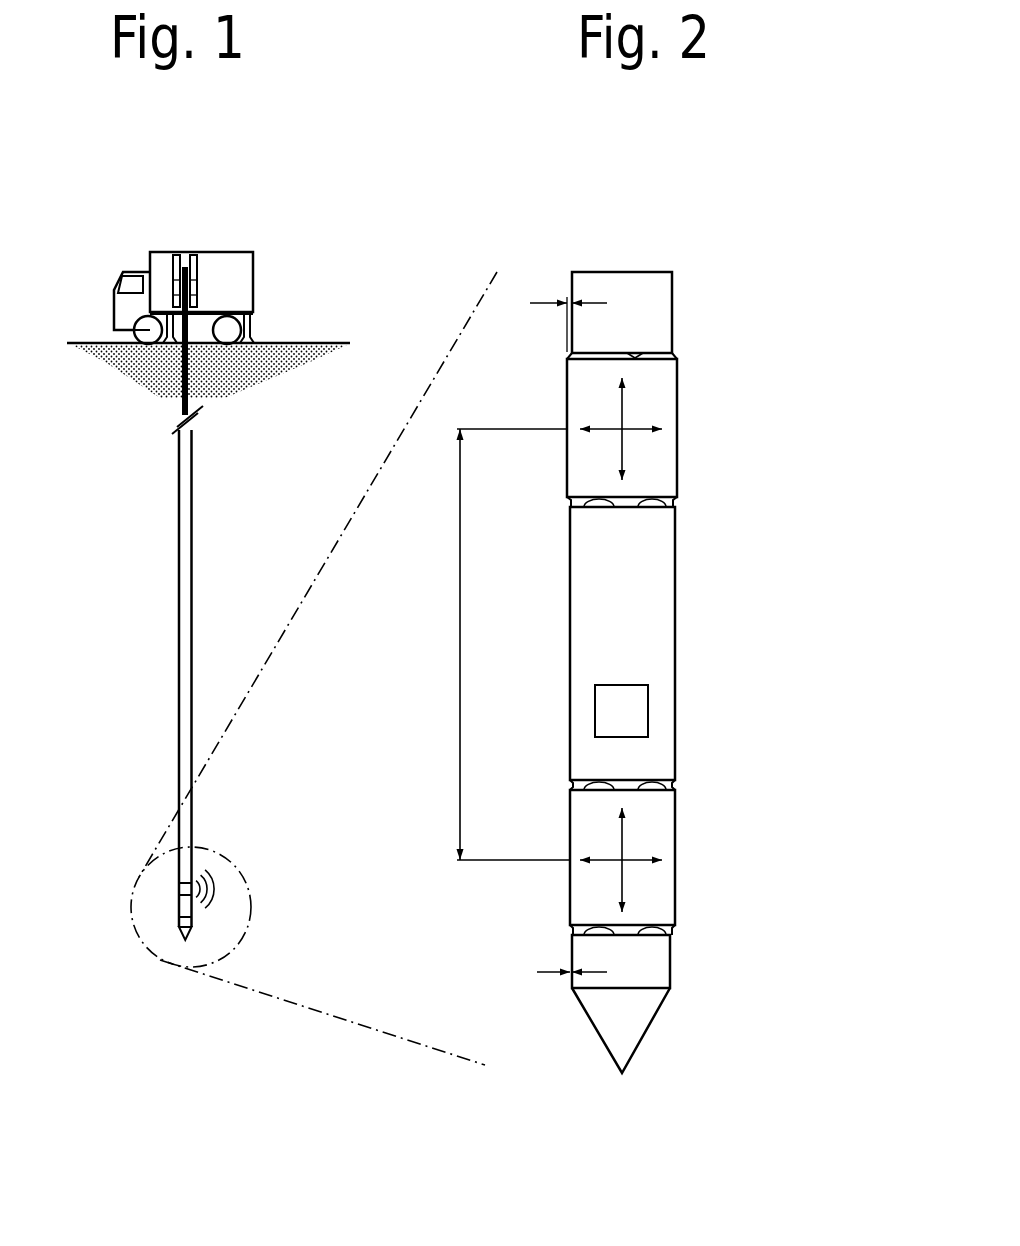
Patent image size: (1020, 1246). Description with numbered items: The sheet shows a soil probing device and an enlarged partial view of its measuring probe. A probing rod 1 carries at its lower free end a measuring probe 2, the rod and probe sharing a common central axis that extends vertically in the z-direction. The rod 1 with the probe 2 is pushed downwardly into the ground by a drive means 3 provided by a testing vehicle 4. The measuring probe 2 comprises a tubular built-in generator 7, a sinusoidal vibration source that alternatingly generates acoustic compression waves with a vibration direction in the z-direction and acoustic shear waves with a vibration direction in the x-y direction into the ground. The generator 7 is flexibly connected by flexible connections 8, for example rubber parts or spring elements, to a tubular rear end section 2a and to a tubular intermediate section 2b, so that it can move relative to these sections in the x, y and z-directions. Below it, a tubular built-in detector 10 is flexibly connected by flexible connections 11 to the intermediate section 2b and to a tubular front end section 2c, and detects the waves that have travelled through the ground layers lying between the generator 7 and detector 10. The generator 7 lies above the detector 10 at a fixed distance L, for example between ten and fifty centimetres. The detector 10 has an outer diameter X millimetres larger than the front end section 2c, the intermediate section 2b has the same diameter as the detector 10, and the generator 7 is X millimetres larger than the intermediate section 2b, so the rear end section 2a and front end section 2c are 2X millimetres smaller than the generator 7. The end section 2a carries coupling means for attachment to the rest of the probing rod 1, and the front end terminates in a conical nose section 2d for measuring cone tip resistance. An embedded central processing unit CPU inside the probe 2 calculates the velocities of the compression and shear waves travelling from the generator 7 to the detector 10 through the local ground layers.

In FIG. 1, the probing rod 1 is at (185, 602).
In FIG. 1, the measuring probe 2 is at (183, 908).
In FIG. 2, the measuring probe 2 is at (700, 258).
In FIG. 1, the drive means 3 is at (172, 267).
In FIG. 1, the testing vehicle 4 is at (227, 280).
In FIG. 2, the built-in generator 7 is at (652, 398).
In FIG. 2, the flexible connections 8 is at (595, 358).
In FIG. 2, the built-in detector 10 is at (652, 820).
In FIG. 2, the flexible connections 11 is at (605, 783).
In FIG. 2, the rear end section 2a is at (645, 328).
In FIG. 2, the intermediate section 2b is at (643, 648).
In FIG. 2, the front end section 2c is at (650, 965).
In FIG. 2, the conical nose section 2d is at (625, 1032).
In FIG. 2, the central processing unit CPU is at (618, 713).
In FIG. 2, the fixed distance L is at (506, 644).
In FIG. 2, the diameter difference X is at (569, 962).
In FIG. 2, the double diameter difference 2X is at (562, 316).